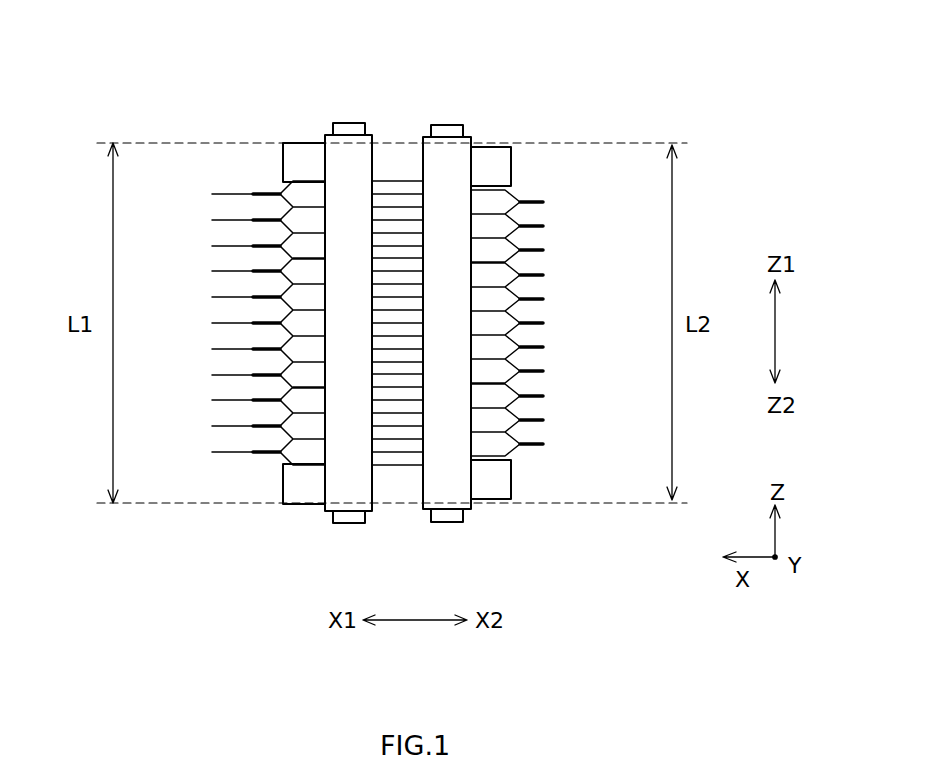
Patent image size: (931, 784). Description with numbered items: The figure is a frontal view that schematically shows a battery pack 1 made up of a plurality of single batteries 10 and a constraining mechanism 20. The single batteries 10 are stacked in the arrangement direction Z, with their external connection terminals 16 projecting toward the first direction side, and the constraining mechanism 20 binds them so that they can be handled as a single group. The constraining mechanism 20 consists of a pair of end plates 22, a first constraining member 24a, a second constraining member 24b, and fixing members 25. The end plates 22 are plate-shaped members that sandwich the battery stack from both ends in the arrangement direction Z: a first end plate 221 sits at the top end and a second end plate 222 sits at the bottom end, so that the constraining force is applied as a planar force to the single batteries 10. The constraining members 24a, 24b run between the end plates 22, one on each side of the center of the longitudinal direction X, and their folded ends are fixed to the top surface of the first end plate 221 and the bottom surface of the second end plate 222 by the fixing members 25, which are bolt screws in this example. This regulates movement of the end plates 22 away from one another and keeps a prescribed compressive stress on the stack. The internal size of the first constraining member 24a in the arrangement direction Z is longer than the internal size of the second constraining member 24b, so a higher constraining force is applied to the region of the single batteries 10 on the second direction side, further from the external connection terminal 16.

The battery pack 1 is at (566, 79).
The constraining mechanism 20 is at (385, 311).
The first constraining member 24a is at (326, 135).
The second constraining member 24b is at (472, 137).
The fixing member 25 is at (440, 125).
The end plate 22 is at (461, 323).
The first end plate 221 is at (512, 171).
The second end plate 222 is at (512, 477).
The single battery 10 is at (227, 323).
The external connection terminal 16 is at (212, 452).